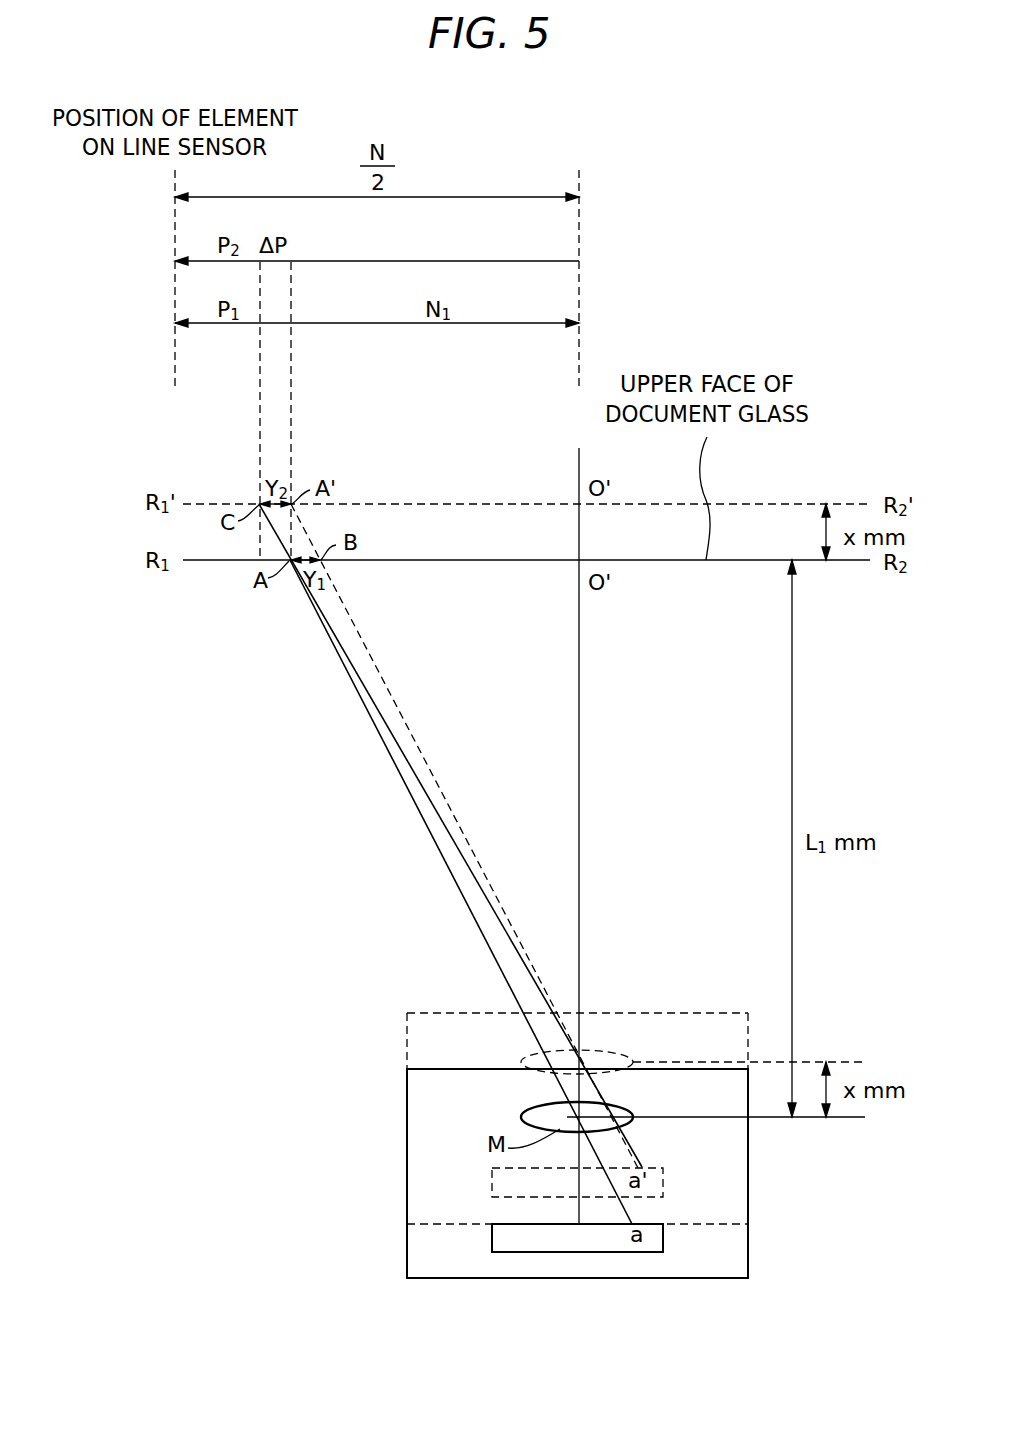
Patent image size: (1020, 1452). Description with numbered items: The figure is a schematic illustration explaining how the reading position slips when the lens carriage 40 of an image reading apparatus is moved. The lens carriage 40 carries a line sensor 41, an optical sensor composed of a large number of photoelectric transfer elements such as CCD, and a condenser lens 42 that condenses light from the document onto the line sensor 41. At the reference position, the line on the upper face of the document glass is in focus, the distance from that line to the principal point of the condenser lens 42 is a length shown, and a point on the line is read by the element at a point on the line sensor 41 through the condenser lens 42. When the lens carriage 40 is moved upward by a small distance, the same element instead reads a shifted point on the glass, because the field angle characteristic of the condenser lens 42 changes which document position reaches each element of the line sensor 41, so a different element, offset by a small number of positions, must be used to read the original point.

The lens carriage 40 is at (407, 1252).
The line sensor 41 is at (655, 1241).
The condenser lens 42 is at (640, 1126).